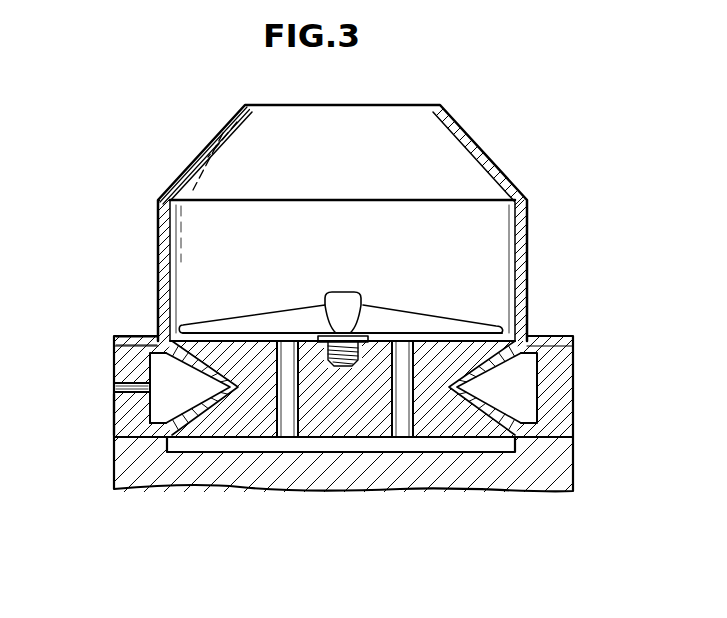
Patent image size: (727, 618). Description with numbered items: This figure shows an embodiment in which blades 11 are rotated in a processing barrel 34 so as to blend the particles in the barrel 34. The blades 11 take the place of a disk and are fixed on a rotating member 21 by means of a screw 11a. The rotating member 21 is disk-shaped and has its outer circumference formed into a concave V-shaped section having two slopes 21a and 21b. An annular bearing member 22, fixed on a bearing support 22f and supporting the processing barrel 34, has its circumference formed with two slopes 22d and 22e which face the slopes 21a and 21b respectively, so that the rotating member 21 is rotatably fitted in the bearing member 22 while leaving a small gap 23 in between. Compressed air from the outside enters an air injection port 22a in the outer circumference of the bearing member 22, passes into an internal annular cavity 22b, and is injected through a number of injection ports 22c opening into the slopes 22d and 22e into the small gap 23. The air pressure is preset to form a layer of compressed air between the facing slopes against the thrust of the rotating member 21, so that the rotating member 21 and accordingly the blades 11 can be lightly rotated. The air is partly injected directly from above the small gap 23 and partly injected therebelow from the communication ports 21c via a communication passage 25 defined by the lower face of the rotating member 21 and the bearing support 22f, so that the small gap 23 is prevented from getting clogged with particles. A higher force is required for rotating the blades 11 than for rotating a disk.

The blades 11 is at (450, 320).
The screw 11a is at (322, 366).
The rotating member 21 is at (360, 422).
The slope 21a is at (232, 367).
The slope 21b is at (207, 420).
The communication ports 21c is at (405, 425).
The bearing member 22 is at (573, 347).
The air injection port 22a is at (114, 389).
The annular cavity 22b is at (535, 396).
The injection ports 22c is at (148, 408).
The slope 22d is at (188, 334).
The slope 22e is at (166, 432).
The bearing support 22f is at (556, 469).
The small gap 23 is at (197, 425).
The communication passage 25 is at (478, 444).
The processing barrel 34 is at (522, 303).